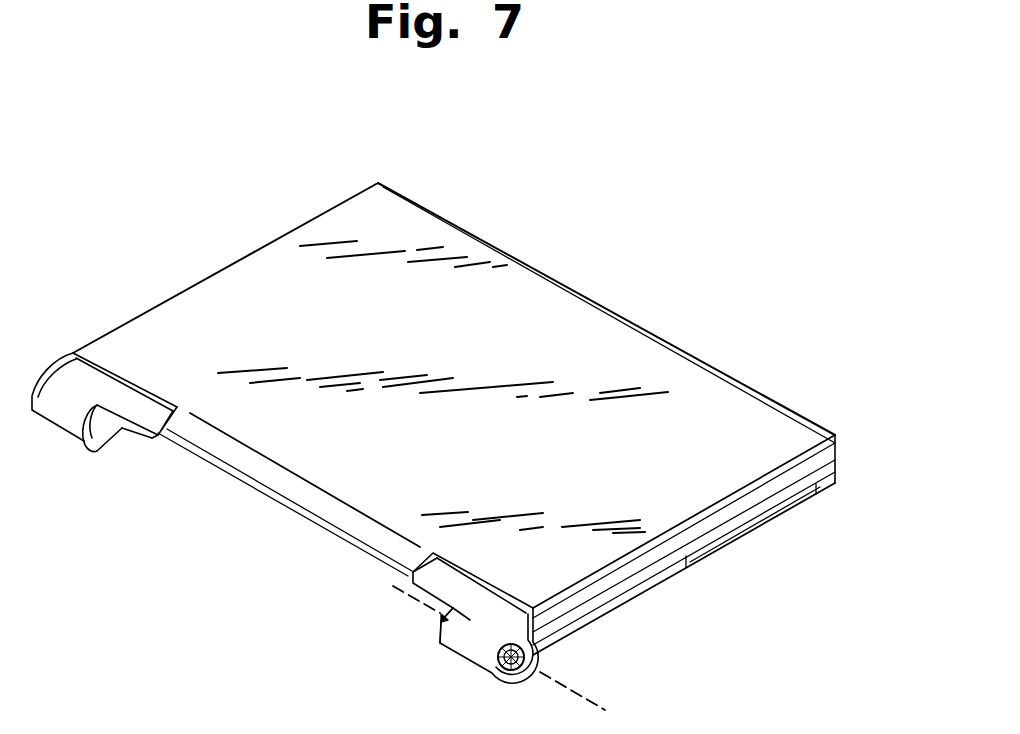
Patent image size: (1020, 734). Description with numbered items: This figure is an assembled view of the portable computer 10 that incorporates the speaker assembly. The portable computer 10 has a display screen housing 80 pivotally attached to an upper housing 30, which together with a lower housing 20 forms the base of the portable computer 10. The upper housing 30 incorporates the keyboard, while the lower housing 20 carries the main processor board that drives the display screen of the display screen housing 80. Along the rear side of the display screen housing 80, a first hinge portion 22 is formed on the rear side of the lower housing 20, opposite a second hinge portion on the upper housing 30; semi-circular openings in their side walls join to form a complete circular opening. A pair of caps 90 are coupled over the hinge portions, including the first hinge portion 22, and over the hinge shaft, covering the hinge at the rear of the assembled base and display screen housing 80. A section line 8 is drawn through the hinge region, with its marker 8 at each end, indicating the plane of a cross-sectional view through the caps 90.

The portable computer 10 is at (218, 198).
The display screen housing 80 is at (197, 303).
The upper housing 30 is at (830, 469).
The lower housing 20 is at (833, 482).
The first hinge portion 22 is at (462, 661).
The caps 90 is at (442, 618).
The section line 8- 8 is at (383, 589).